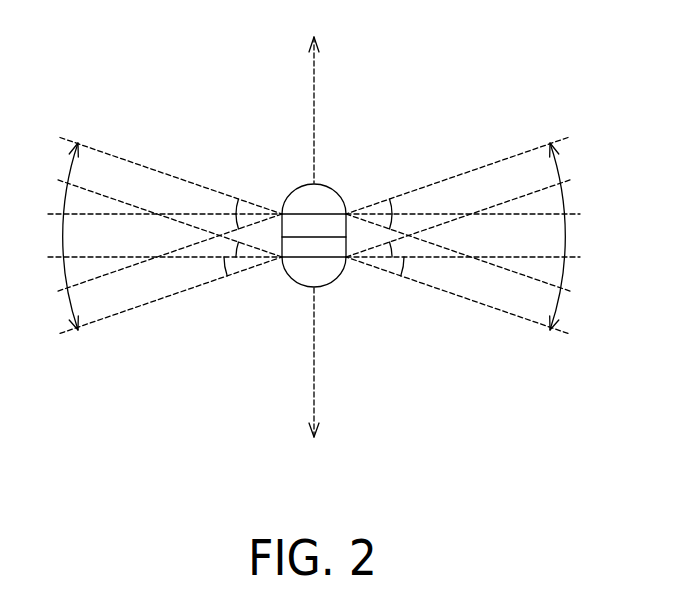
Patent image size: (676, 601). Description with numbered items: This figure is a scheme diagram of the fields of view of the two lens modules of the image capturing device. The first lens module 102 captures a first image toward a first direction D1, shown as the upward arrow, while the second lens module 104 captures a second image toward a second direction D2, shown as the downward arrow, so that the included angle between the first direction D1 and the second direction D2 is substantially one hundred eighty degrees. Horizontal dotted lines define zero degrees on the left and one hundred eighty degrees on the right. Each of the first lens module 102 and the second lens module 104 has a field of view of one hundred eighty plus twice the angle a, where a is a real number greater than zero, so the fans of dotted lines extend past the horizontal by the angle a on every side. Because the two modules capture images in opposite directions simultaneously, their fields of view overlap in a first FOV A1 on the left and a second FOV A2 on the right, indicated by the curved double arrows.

The first lens module 102 is at (351, 178).
The second lens module 104 is at (339, 276).
The first direction D1 is at (312, 94).
The second direction D2 is at (312, 378).
The first FOV A1 is at (53, 236).
The second FOV A2 is at (575, 236).
The angle a is at (313, 234).